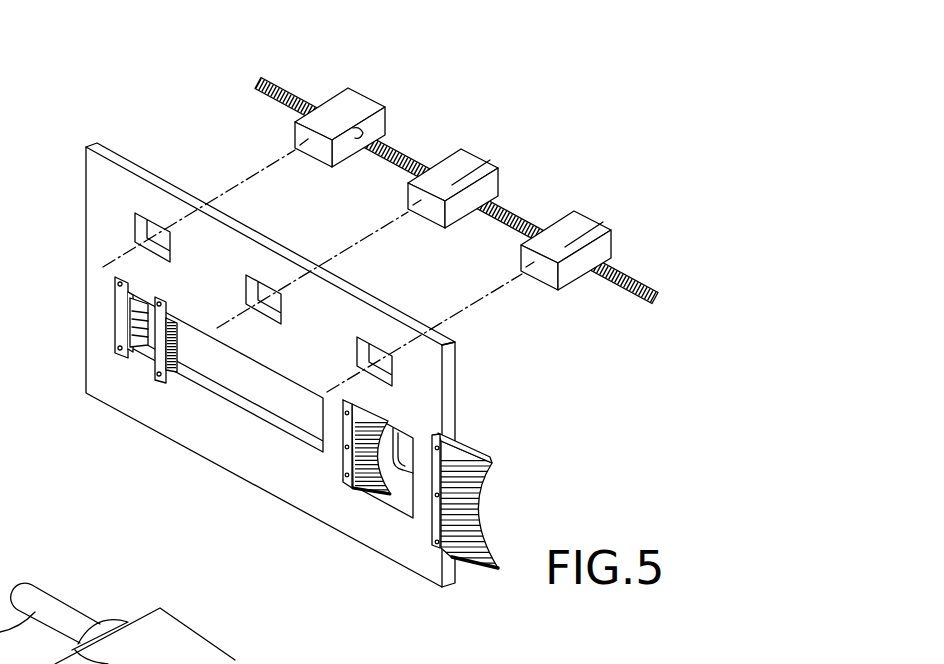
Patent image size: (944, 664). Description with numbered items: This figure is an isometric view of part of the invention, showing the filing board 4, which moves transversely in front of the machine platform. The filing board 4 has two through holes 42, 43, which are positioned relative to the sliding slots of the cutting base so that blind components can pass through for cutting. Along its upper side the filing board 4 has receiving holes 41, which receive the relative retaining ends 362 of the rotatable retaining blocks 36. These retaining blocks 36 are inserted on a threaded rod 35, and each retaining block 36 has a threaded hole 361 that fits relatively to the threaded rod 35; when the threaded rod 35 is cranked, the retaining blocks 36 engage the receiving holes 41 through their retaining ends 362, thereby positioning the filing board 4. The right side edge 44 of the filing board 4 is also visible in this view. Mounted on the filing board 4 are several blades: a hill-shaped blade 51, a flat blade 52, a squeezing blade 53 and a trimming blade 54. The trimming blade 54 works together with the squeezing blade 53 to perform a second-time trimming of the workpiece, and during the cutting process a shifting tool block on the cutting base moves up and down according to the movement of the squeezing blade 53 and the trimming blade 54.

The filing board 4 is at (92, 182).
The receiving holes 41 is at (152, 228).
The through hole 42 is at (242, 404).
The through hole 43 is at (392, 507).
The side edge of panel 44 is at (448, 393).
The threaded rod 35 is at (405, 153).
The retaining blocks 36 is at (342, 103).
The threaded hole 361 is at (364, 133).
The retaining ends 362 is at (303, 132).
The hill-shaped blade 51 is at (438, 555).
The flat blade 52 is at (348, 487).
The squeezing blade 53 is at (160, 378).
The trimming blade 54 is at (115, 354).